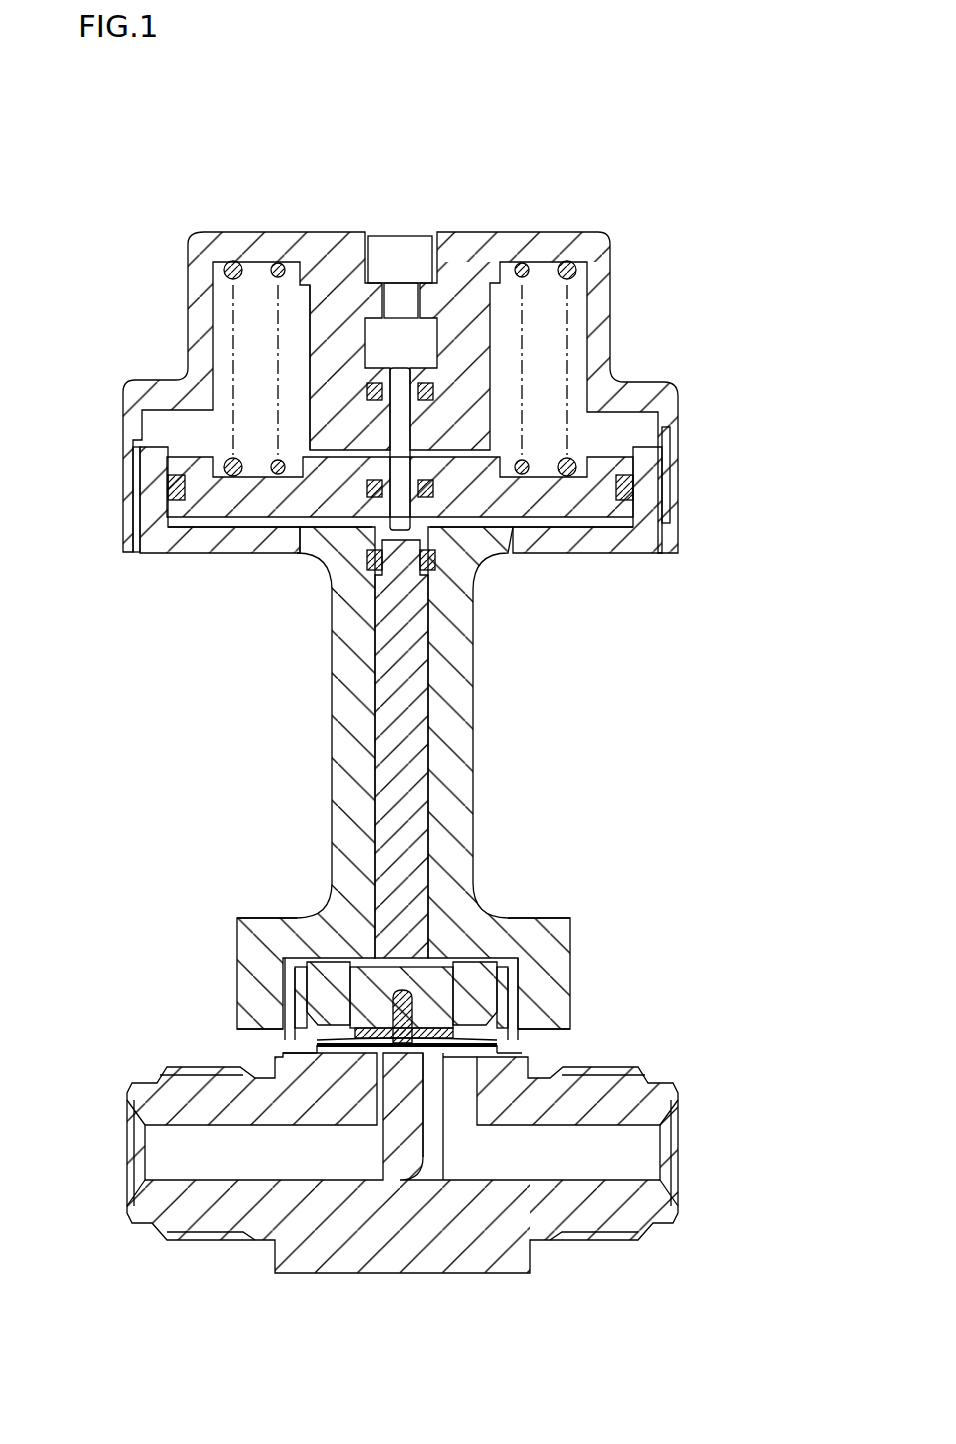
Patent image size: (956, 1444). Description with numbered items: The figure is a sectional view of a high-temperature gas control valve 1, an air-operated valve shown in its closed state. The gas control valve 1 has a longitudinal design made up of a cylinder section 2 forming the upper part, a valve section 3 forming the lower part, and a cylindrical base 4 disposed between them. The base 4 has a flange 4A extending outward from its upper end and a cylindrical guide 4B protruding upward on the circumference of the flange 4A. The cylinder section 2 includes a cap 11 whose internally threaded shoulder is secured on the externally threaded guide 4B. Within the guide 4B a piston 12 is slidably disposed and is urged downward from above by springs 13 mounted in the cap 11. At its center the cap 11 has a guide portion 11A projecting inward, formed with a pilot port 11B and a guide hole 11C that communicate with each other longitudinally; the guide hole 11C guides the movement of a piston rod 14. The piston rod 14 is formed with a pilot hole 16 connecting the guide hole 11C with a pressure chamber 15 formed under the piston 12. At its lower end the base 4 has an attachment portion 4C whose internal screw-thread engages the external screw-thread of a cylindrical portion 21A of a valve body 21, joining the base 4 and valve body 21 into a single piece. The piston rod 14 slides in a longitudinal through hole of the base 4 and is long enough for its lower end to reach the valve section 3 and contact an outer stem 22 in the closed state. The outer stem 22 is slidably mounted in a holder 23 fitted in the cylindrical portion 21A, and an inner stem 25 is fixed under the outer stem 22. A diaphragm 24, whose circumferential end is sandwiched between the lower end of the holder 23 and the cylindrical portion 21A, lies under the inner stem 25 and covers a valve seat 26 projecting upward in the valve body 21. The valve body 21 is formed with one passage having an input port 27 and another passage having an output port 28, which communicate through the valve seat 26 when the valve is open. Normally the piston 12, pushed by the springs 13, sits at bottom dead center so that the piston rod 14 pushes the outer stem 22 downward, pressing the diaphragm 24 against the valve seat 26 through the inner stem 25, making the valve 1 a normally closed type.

The high-temp. gas control valve 1 is at (483, 103).
The cylinder section 2 is at (95, 224).
The valve section 3 is at (85, 984).
The cylindrical base 4 is at (350, 749).
The flange 4A is at (190, 540).
The cylindrical guide 4B is at (153, 463).
The attachment portion 4C is at (255, 948).
The cap 11 is at (648, 390).
The guide portion 11A is at (325, 328).
The pilot port 11B is at (417, 247).
The guide hole 11C is at (378, 327).
The piston 12 is at (600, 460).
The springs 13 is at (569, 261).
The piston rod 14 is at (420, 656).
The pressure chamber 15 is at (263, 520).
The pilot hole 16 is at (402, 373).
The valve body 21 is at (381, 1258).
The cylindrical portion 21A is at (505, 1008).
The outer stem 22 is at (440, 973).
The holder 23 is at (487, 972).
The diaphragm 24 is at (320, 1052).
The inner stem 25 is at (387, 1023).
The valve seat 26 is at (390, 1056).
The input port 27 is at (163, 1158).
The output port 28 is at (610, 1160).